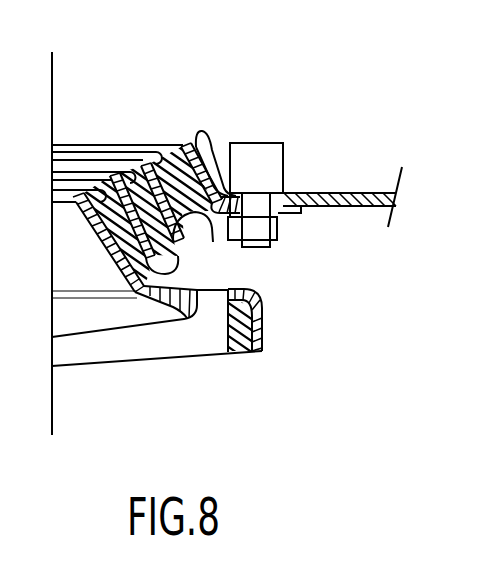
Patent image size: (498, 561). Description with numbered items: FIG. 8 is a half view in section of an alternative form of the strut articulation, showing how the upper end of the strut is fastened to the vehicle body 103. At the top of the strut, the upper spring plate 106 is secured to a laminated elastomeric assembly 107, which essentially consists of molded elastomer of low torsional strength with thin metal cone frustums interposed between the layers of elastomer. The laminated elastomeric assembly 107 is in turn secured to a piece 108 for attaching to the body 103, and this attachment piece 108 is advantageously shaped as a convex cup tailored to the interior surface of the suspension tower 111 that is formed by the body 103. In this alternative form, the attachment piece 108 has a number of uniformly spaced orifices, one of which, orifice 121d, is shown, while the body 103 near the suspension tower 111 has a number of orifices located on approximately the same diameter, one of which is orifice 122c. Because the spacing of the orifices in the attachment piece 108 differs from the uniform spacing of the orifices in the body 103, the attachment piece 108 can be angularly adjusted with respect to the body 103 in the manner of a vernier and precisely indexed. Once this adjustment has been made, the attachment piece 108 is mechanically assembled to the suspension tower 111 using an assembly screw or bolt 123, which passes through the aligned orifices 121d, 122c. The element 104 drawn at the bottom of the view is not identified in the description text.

The body 103 is at (377, 192).
The base plate 104 is at (134, 342).
The upper spring plate 106 is at (268, 330).
The laminated elastomeric assembly 107 is at (192, 246).
The piece for attaching to the body 108 is at (285, 208).
The suspension tower 111 is at (203, 140).
The orifice 121d is at (280, 240).
The orifice 122c is at (268, 210).
The assembly screw or bolt 123 is at (257, 150).